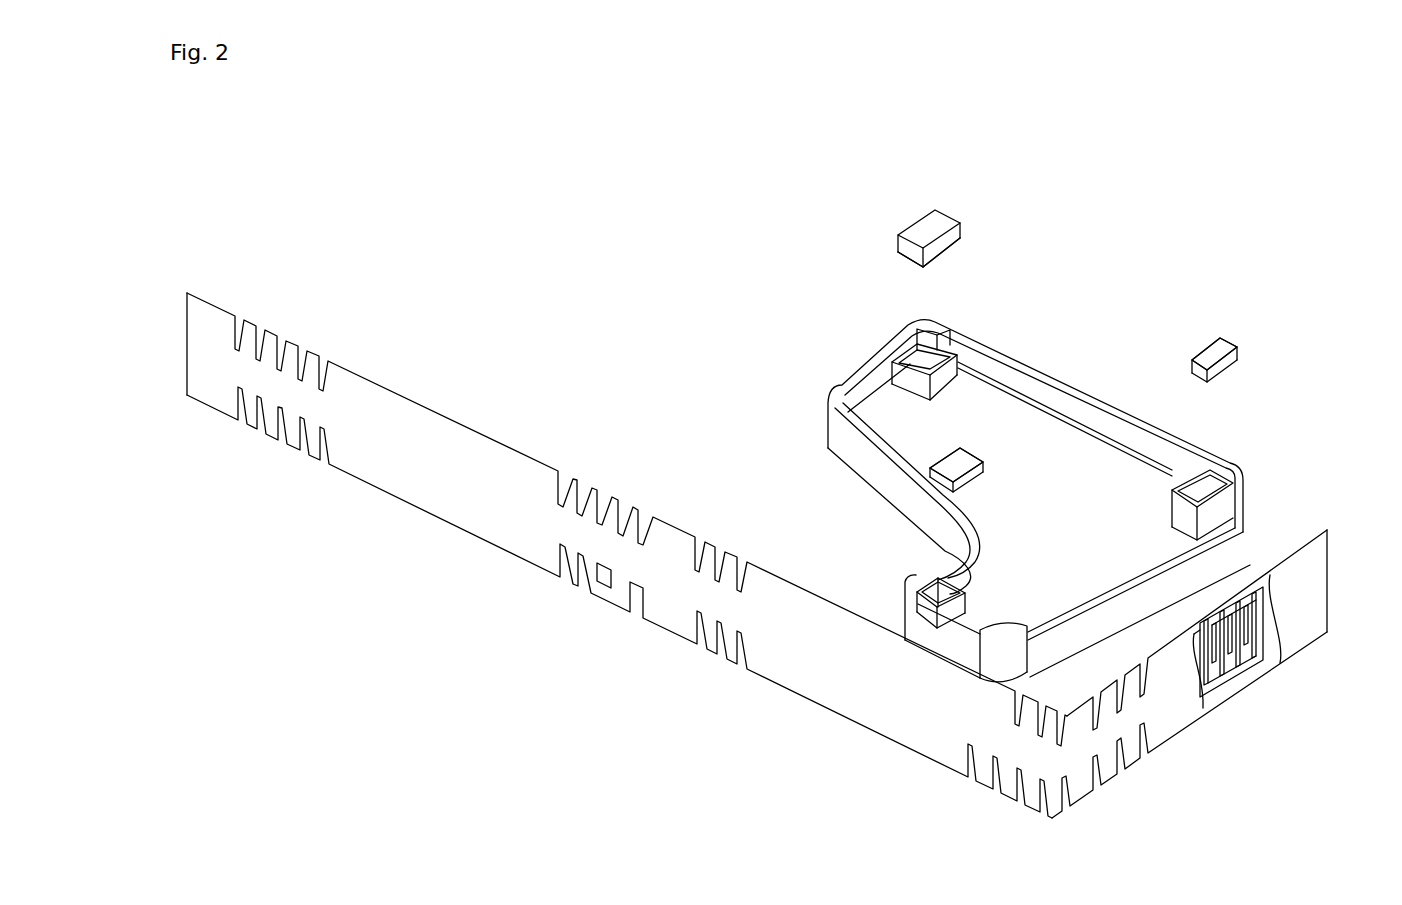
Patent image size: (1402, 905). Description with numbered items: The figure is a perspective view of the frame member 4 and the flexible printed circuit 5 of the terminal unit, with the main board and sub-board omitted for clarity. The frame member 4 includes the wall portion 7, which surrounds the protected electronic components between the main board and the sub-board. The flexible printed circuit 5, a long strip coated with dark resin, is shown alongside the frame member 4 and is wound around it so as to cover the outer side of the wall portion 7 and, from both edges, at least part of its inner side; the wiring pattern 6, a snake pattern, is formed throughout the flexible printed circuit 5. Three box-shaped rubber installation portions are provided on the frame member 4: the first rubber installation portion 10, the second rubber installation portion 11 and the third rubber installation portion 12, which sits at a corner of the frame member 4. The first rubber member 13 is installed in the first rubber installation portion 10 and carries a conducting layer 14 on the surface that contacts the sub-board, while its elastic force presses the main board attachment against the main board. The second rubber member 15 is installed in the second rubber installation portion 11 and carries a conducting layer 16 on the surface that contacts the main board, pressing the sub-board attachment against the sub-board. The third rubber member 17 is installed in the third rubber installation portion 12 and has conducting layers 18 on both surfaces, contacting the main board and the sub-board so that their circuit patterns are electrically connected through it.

The frame member 4 is at (1060, 501).
The flexible printed circuit 5 is at (1330, 578).
The wiring pattern 6 is at (1232, 680).
The wall portion 7 is at (1105, 603).
The first rubber installation portion 10 is at (925, 396).
The second rubber installation portion 11 is at (1178, 513).
The third rubber installation portion 12 is at (965, 606).
The first rubber member 13 is at (962, 225).
The conducting layer 14 is at (942, 256).
The second rubber member 15 is at (1236, 361).
The conducting layer 16 is at (1211, 355).
The third rubber member 17 is at (985, 452).
The conducting layers 18 is at (960, 466).